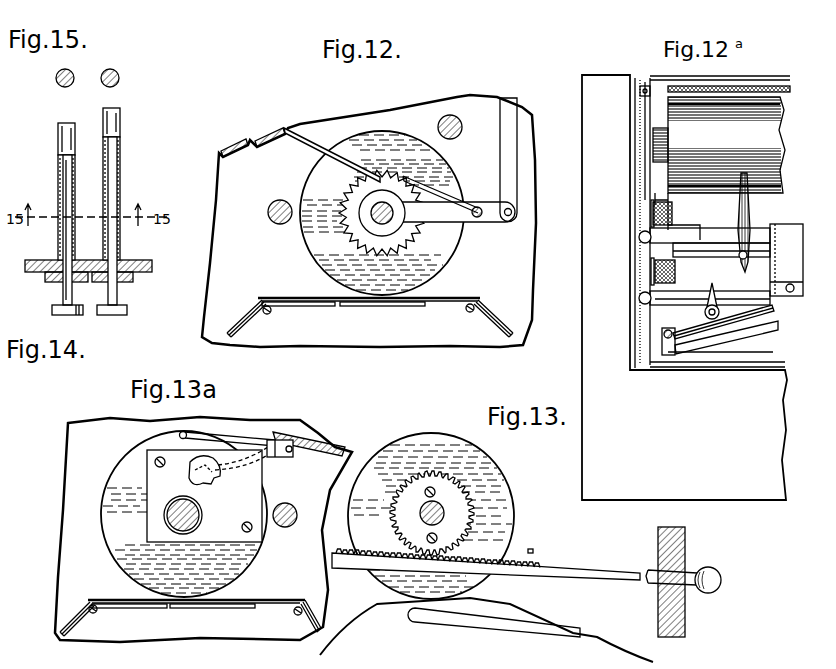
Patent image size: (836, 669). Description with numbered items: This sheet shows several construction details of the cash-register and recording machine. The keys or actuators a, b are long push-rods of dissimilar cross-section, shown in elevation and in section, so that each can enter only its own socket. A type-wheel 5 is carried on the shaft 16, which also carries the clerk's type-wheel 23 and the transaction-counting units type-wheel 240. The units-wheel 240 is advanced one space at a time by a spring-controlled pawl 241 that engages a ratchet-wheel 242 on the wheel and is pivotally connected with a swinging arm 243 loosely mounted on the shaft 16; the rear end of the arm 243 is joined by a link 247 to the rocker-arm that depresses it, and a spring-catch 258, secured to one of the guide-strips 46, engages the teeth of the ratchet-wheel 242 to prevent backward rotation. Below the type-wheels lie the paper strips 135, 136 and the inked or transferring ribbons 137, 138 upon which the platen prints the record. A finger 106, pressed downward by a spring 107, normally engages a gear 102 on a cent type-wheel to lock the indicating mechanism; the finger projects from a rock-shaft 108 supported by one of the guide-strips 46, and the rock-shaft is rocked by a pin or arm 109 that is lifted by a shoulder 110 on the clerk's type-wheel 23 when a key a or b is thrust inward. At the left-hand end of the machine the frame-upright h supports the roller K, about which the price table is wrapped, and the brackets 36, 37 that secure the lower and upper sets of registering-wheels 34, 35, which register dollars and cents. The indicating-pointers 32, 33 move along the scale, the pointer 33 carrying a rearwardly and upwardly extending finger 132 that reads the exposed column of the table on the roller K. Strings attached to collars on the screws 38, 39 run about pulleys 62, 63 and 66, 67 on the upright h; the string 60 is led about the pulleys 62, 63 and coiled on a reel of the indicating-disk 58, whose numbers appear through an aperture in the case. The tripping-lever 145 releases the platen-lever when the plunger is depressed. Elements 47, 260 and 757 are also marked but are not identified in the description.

In FIG. 13, the type-wheel 5 is at (513, 507).
In FIG. 12, the shaft 16 is at (378, 218).
In FIG. 13A, the shaft 16 is at (197, 517).
In FIG. 13A, the clerk's type-wheel 23 is at (122, 470).
In FIG. 12A, the indicating-pointer 32 is at (712, 293).
In FIG. 12A, the indicating-pointer 33 is at (744, 267).
In FIG. 12A, the registering-wheels 34 is at (658, 277).
In FIG. 12A, the registering-wheels 35 is at (658, 208).
In FIG. 12A, the bracket 36 is at (682, 263).
In FIG. 12A, the bracket 37 is at (672, 207).
In FIG. 12, the screw 38 is at (275, 226).
In FIG. 13A, the screw 38 is at (295, 505).
In FIG. 12, the screw 39 is at (462, 125).
In FIG. 12, the guide-strip 46 is at (260, 130).
In FIG. 12A, the guide-strip 46 is at (770, 297).
In FIG. 13A, the guide-strip 46 is at (305, 440).
In FIG. 12A, the rod 47 is at (757, 237).
In FIG. 12A, the indicating-disk 58 is at (742, 88).
In FIG. 12A, the string 60 is at (637, 157).
In FIG. 12A, the pulley 62 is at (636, 98).
In FIG. 12A, the pulley 63 is at (639, 300).
In FIG. 12A, the pulley 66 is at (639, 238).
In FIG. 12A, the pulley 67 is at (638, 92).
In FIG. 13A, the gear 102 is at (195, 486).
In FIG. 13A, the finger 106 is at (222, 474).
In FIG. 13A, the spring 107 is at (272, 440).
In FIG. 13A, the rock-shaft 108 is at (293, 452).
In FIG. 13A, the pin or arm 109 is at (232, 440).
In FIG. 13A, the shoulder 110 is at (186, 431).
In FIG. 12A, the finger or pointer 132 is at (747, 183).
In FIG. 12, the paper strip 135 is at (338, 306).
In FIG. 13A, the paper strip 135 is at (150, 609).
In FIG. 12, the paper strip 136 is at (373, 300).
In FIG. 13A, the paper strip 136 is at (132, 601).
In FIG. 12, the inked ribbon 137 is at (303, 306).
In FIG. 13A, the inked ribbon 137 is at (117, 609).
In FIG. 12, the inked ribbon 138 is at (282, 298).
In FIG. 13A, the inked ribbon 138 is at (262, 600).
In FIG. 12A, the tripping-lever 145 is at (733, 338).
In FIG. 12, the units type-wheel 240 is at (390, 142).
In FIG. 12, the spring-controlled pawl 241 is at (453, 182).
In FIG. 12, the ratchet-wheel 242 is at (402, 238).
In FIG. 12, the swinging arm 243 is at (462, 228).
In FIG. 12, the link 247 is at (512, 148).
In FIG. 12, the spring-catch 258 is at (308, 142).
In FIG. 13, the slot 260 is at (465, 630).
In FIG. 12A, the link 757 is at (763, 320).
In FIG. 15, the key or actuator a is at (75, 77).
In FIG. 14, the key or actuator a is at (63, 185).
In FIG. 15, the key or actuator b is at (120, 78).
In FIG. 14, the key or actuator b is at (112, 172).
In FIG. 12A, the frame-upright h is at (655, 140).
In FIG. 12A, the roller K is at (726, 145).